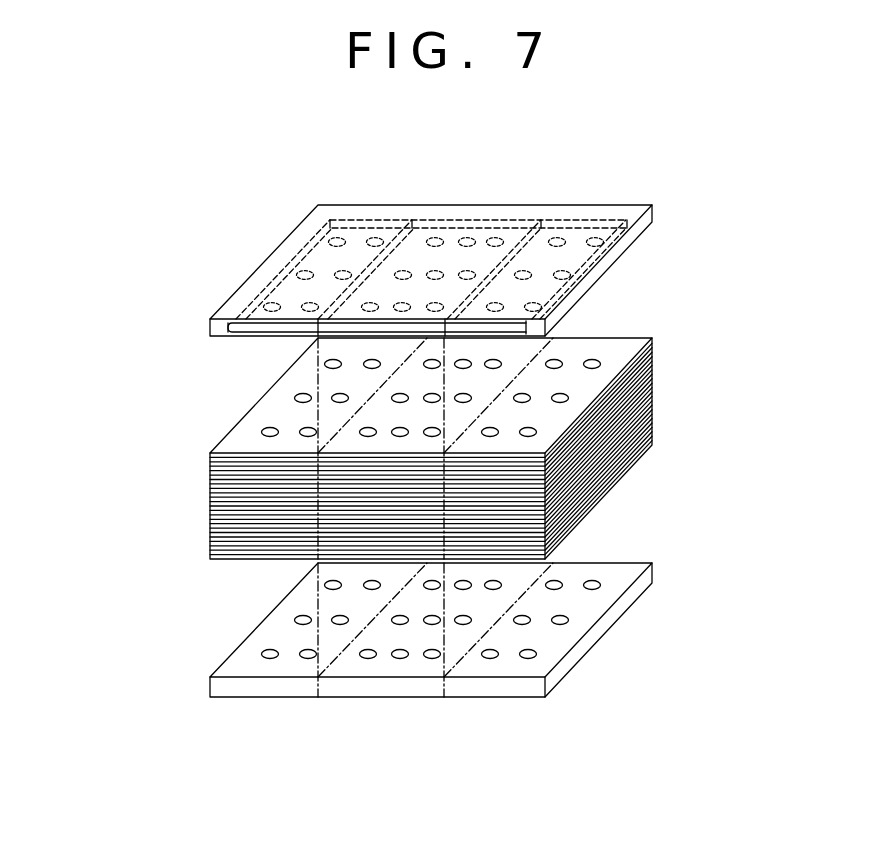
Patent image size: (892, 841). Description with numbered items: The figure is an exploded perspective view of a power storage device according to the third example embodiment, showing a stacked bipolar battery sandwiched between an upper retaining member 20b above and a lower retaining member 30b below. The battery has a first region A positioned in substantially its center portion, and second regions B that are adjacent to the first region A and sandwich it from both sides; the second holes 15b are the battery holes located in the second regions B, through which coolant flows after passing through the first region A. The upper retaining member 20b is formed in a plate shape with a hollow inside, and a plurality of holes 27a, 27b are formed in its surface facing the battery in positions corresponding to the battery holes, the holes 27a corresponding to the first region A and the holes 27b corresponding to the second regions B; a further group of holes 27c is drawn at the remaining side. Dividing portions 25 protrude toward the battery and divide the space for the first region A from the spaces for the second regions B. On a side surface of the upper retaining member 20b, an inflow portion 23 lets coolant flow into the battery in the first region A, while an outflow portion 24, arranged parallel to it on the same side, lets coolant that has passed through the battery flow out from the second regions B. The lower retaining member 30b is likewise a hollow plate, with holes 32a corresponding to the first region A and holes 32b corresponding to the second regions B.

The upper retaining member 20b is at (653, 213).
The inflow portion 23 is at (302, 338).
The outflow portion 24 is at (548, 332).
The dividing portions 25 is at (368, 273).
The holes 27a is at (465, 238).
The holes 27b is at (377, 238).
The through holes (27) in right group 27c is at (595, 240).
The first region A is at (400, 448).
The second regions B is at (268, 415).
The second holes 15b is at (265, 432).
The lower retaining member 30b is at (655, 570).
The holes 32a is at (397, 658).
The holes 32b is at (268, 652).